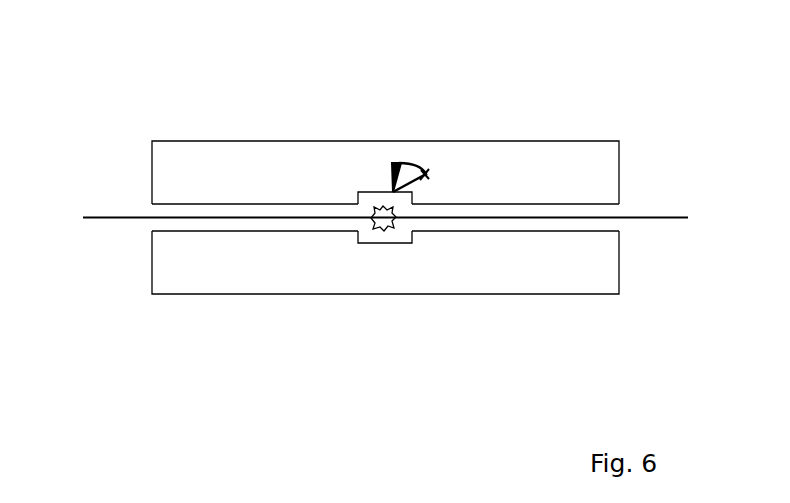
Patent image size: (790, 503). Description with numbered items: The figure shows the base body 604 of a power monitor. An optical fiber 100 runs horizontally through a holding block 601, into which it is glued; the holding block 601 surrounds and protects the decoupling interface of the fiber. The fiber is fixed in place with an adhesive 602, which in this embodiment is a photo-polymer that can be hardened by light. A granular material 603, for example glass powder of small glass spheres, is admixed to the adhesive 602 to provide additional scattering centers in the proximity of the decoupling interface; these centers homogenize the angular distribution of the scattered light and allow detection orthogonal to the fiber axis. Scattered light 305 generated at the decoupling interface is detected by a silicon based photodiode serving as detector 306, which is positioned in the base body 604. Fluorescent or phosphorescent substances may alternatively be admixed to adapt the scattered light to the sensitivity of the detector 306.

The optical fiber 100 is at (113, 217).
The holding block 601 is at (207, 167).
The adhesive 602 is at (220, 223).
The granular material 603 is at (400, 225).
The scattered light 305 is at (383, 210).
The detector 306 is at (425, 173).
The base body 604 is at (636, 98).